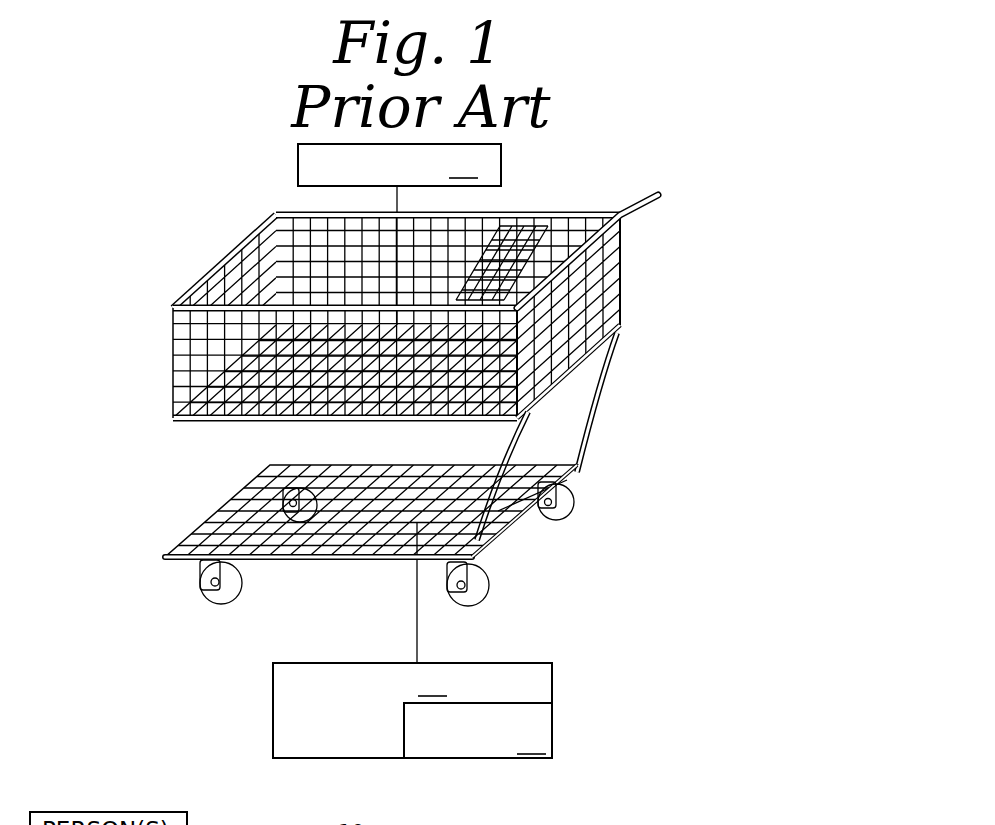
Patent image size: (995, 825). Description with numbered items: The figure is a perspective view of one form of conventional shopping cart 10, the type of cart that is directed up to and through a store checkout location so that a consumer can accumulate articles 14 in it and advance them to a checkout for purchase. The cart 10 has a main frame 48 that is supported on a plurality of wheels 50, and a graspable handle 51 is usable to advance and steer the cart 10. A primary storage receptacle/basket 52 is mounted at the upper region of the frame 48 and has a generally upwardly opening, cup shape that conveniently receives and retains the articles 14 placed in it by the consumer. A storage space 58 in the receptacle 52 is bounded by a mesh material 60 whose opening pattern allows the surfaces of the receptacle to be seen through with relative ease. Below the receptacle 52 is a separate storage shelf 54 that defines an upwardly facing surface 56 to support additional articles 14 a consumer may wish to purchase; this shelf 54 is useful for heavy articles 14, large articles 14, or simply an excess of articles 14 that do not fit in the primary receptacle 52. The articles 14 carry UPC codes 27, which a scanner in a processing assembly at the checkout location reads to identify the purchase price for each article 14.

The shopping cart 10 is at (411, 380).
The articles 14 is at (412, 451).
The UPC codes 27 is at (478, 730).
The main frame 48 is at (500, 512).
The wheels 50 is at (290, 500).
The graspable handle 51 is at (633, 207).
The primary storage receptacle/basket 52 is at (387, 286).
The storage shelf 54 is at (330, 493).
The upwardly facing surface 56 is at (378, 474).
The storage space 58 is at (472, 236).
The mesh material 60 is at (176, 322).